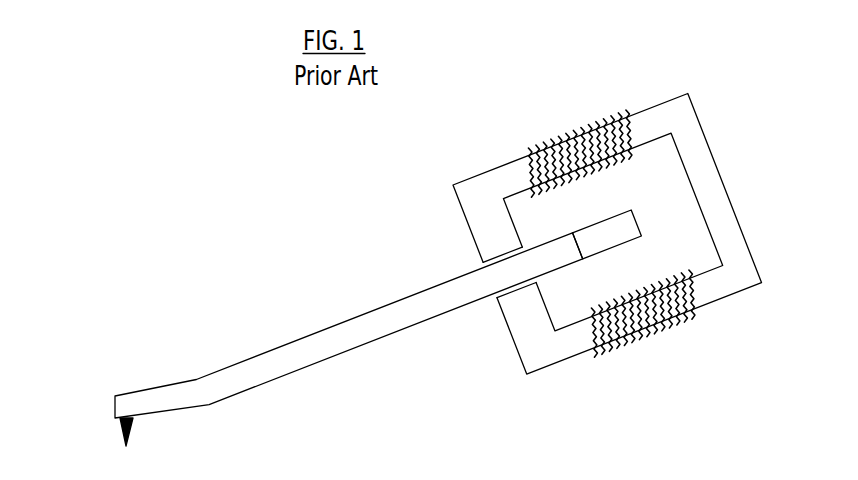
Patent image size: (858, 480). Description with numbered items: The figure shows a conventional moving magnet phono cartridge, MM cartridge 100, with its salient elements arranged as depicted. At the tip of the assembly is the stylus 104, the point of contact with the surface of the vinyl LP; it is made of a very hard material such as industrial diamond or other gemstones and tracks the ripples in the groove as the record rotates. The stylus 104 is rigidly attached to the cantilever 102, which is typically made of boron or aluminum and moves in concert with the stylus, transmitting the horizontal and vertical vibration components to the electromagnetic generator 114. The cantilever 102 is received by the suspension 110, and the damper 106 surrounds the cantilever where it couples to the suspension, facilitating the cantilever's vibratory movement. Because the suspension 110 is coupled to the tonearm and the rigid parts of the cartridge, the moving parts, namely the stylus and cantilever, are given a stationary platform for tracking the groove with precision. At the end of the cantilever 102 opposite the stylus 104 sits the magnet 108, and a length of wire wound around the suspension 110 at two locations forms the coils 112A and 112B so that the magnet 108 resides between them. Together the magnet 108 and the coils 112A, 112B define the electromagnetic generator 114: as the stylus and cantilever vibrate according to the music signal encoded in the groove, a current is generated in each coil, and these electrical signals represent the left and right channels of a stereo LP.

The MM cartridge 100 is at (283, 209).
The cantilever 102 is at (400, 300).
The stylus 104 is at (128, 437).
The damper 106 is at (500, 258).
The magnet 108 is at (603, 240).
The suspension 110 is at (723, 207).
The coil 112A is at (558, 140).
The coil 112B is at (690, 312).
The electromagnetic generator 114 is at (648, 181).